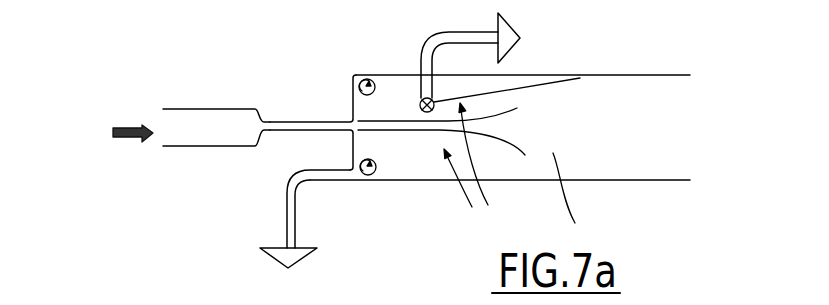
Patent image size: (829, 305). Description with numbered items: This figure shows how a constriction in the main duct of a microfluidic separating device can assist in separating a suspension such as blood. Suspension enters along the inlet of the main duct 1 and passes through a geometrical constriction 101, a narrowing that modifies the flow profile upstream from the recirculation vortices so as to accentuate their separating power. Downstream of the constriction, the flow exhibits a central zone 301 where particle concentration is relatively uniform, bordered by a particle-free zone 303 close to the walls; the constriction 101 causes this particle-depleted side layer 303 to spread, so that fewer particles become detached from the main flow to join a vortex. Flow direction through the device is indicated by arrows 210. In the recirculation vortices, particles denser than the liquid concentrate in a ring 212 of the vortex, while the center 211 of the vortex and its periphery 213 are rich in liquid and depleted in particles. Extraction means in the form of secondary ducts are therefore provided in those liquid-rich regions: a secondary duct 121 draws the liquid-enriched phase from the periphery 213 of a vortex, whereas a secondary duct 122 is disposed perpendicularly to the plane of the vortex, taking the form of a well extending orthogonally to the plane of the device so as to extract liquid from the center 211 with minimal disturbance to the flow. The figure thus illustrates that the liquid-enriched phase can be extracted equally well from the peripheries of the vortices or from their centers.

The inlet channel 1 is at (243, 149).
The geometrical constriction 101 is at (300, 122).
The secondary duct 121 is at (290, 197).
The secondary duct 122 is at (497, 77).
The flow direction 210 is at (475, 168).
The center of the vortex 211 is at (423, 113).
The ring of the vortex 212 is at (397, 153).
The periphery of the vortex 213 is at (364, 173).
The central zone 301 is at (660, 123).
The particle-free zone 303 is at (673, 167).